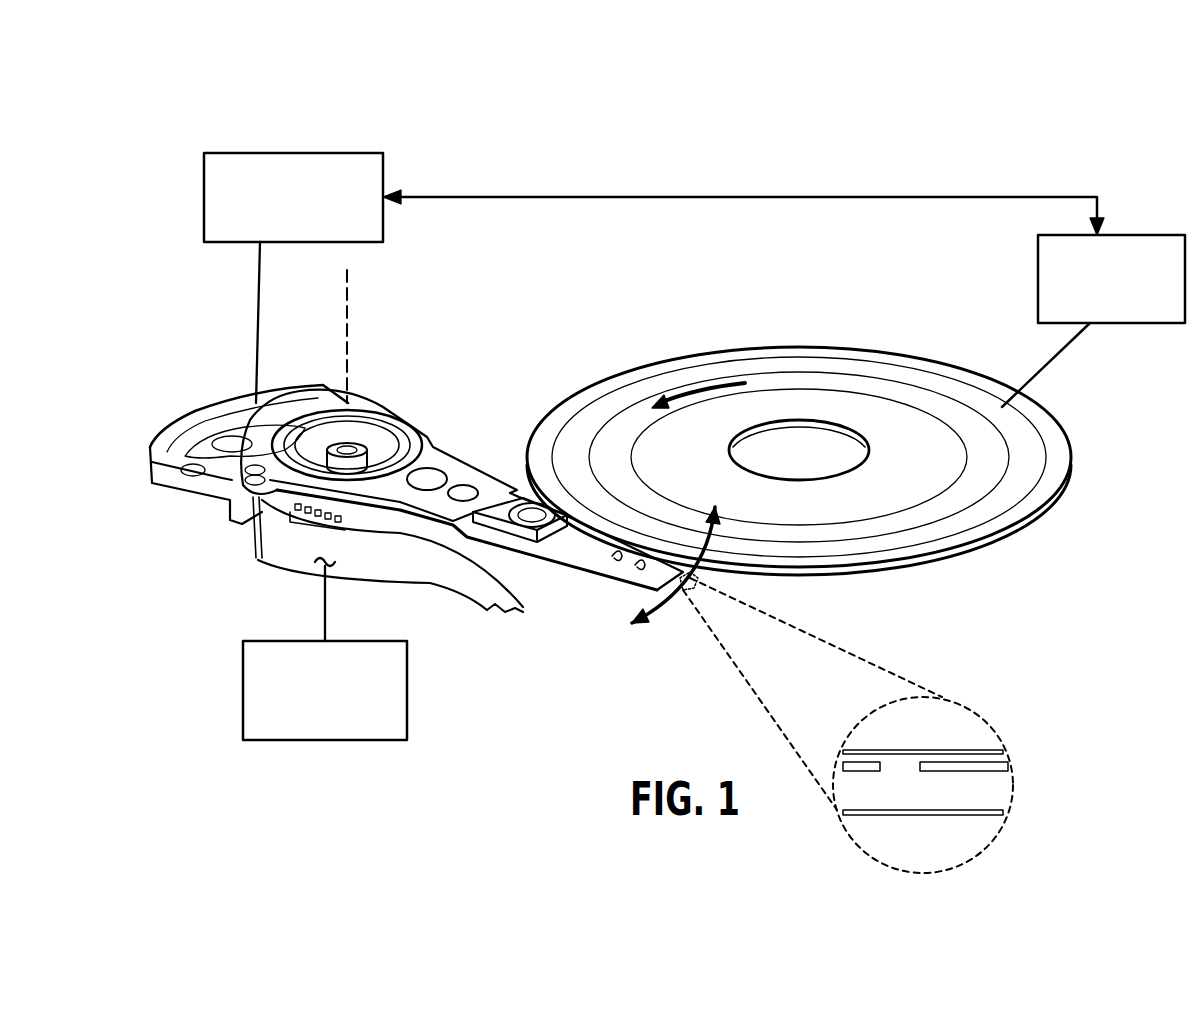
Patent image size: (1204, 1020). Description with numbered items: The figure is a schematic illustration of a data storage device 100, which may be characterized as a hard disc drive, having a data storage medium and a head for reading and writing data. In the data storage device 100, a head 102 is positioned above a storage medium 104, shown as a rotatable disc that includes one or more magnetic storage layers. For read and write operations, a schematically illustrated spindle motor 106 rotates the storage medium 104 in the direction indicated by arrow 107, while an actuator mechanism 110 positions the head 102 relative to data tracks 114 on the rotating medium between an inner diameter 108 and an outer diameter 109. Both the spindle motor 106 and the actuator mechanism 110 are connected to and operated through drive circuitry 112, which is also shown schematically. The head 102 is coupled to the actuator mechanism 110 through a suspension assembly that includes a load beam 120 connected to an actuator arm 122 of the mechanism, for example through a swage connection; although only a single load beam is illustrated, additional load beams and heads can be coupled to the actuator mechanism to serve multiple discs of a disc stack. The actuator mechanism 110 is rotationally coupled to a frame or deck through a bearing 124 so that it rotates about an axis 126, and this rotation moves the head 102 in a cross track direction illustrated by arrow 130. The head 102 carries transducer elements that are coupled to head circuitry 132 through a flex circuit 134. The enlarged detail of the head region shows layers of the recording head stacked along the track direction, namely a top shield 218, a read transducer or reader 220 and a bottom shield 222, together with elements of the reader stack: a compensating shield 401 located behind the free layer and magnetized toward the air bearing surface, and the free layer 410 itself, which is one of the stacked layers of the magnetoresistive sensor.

The data storage device 100 is at (980, 134).
The head 102 is at (690, 585).
The storage medium 104 is at (834, 421).
The spindle motor 106 is at (1149, 234).
The arrow 107 is at (703, 390).
The inner diameter 108 is at (840, 421).
The outer diameter 109 is at (805, 347).
The actuator mechanism 110 is at (546, 540).
The drive circuitry 112 is at (383, 163).
The data tracks 114 is at (950, 485).
The load beam 120 is at (590, 541).
The actuator arm 122 is at (474, 469).
The bearing 124 is at (345, 443).
The axis 126 is at (345, 350).
The arrow 130 is at (665, 558).
The head circuitry 132 is at (407, 688).
The flex circuit 134 is at (336, 498).
The top shield 218 is at (973, 718).
The reader 220 is at (1008, 792).
The bottom shield 222 is at (985, 838).
The compensating shield 401 is at (1008, 768).
The free layer 410 is at (843, 767).